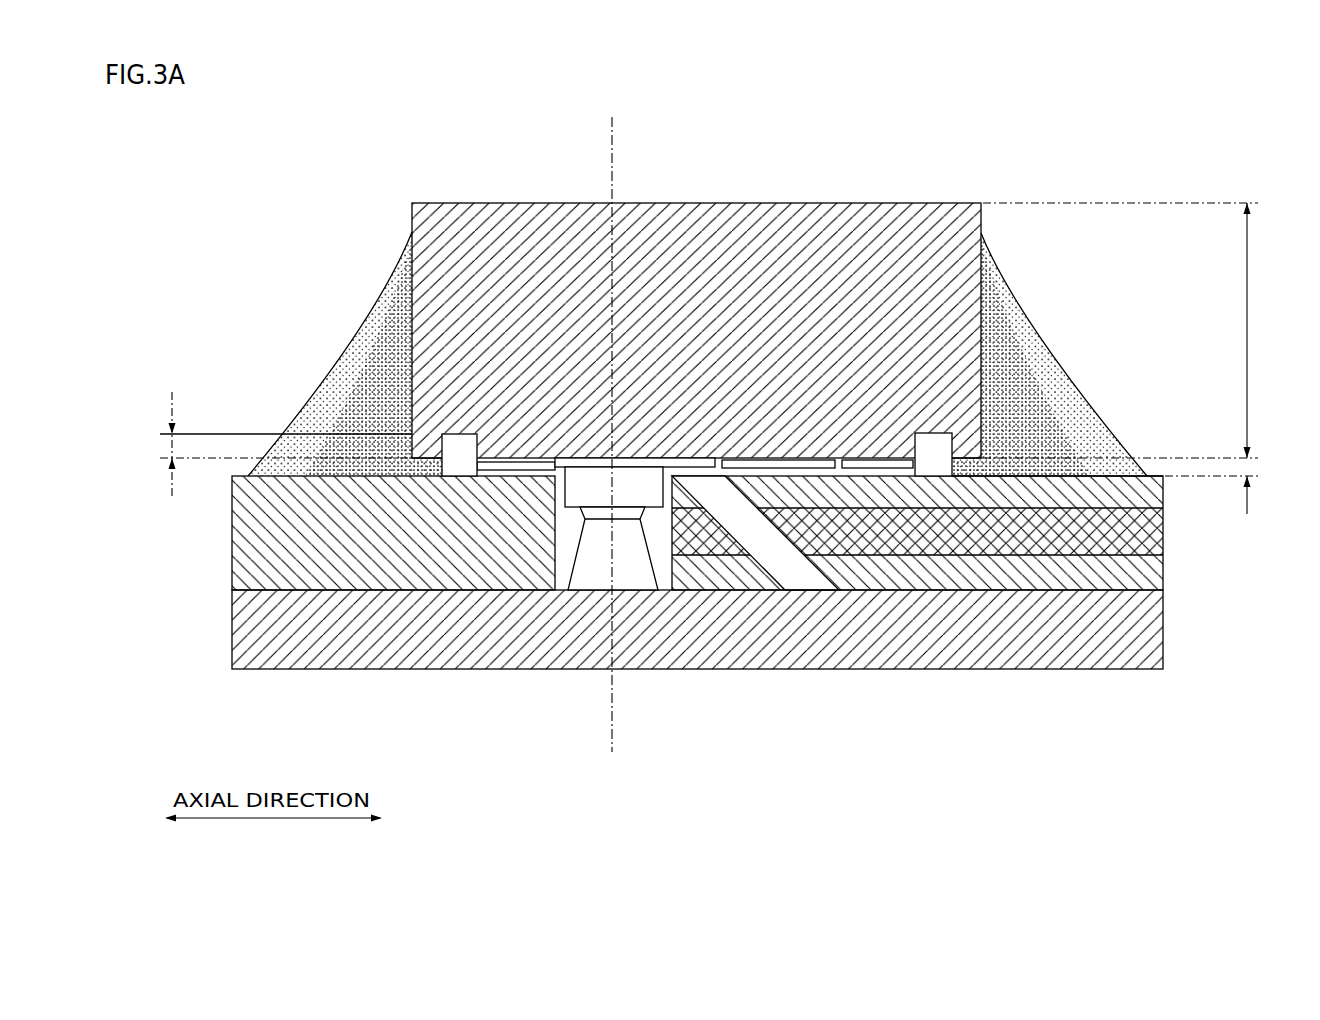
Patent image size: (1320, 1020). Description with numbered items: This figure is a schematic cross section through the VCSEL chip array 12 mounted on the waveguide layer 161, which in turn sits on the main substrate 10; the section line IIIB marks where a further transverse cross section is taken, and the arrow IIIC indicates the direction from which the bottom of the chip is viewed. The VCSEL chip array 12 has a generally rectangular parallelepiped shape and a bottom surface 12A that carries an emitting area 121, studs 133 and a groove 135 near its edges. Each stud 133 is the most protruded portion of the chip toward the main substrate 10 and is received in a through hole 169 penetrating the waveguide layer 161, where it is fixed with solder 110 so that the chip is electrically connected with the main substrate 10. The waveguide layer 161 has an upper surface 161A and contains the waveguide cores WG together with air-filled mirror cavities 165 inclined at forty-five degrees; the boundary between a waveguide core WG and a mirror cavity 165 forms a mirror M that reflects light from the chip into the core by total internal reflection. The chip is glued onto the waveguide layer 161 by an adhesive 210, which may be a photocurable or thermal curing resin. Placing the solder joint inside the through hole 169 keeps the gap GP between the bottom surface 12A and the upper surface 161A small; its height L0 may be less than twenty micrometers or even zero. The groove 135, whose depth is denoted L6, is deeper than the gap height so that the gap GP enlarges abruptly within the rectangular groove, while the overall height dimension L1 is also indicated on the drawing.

The main substrate 10 is at (232, 630).
The VCSEL chip array 12 is at (936, 203).
The bottom surface 12A is at (975, 478).
The emitting area 121 is at (858, 470).
The stud 133 is at (593, 490).
The groove 135 is at (461, 440).
The waveguide layer 161 is at (232, 571).
The upper surface 161A is at (1102, 472).
The mirror cavity 165 is at (775, 470).
The through hole 169 is at (569, 582).
The solder 110 is at (658, 552).
The adhesive 210 is at (334, 368).
The gap GP is at (412, 474).
The mirror M is at (757, 470).
The waveguide core WG is at (1165, 531).
The height of the gap L0 is at (1225, 486).
The dimension L1 is at (1134, 330).
The depth of the groove L6 is at (271, 444).
The line IIIB- IIIB is at (618, 129).
The arrow IIIC is at (518, 494).